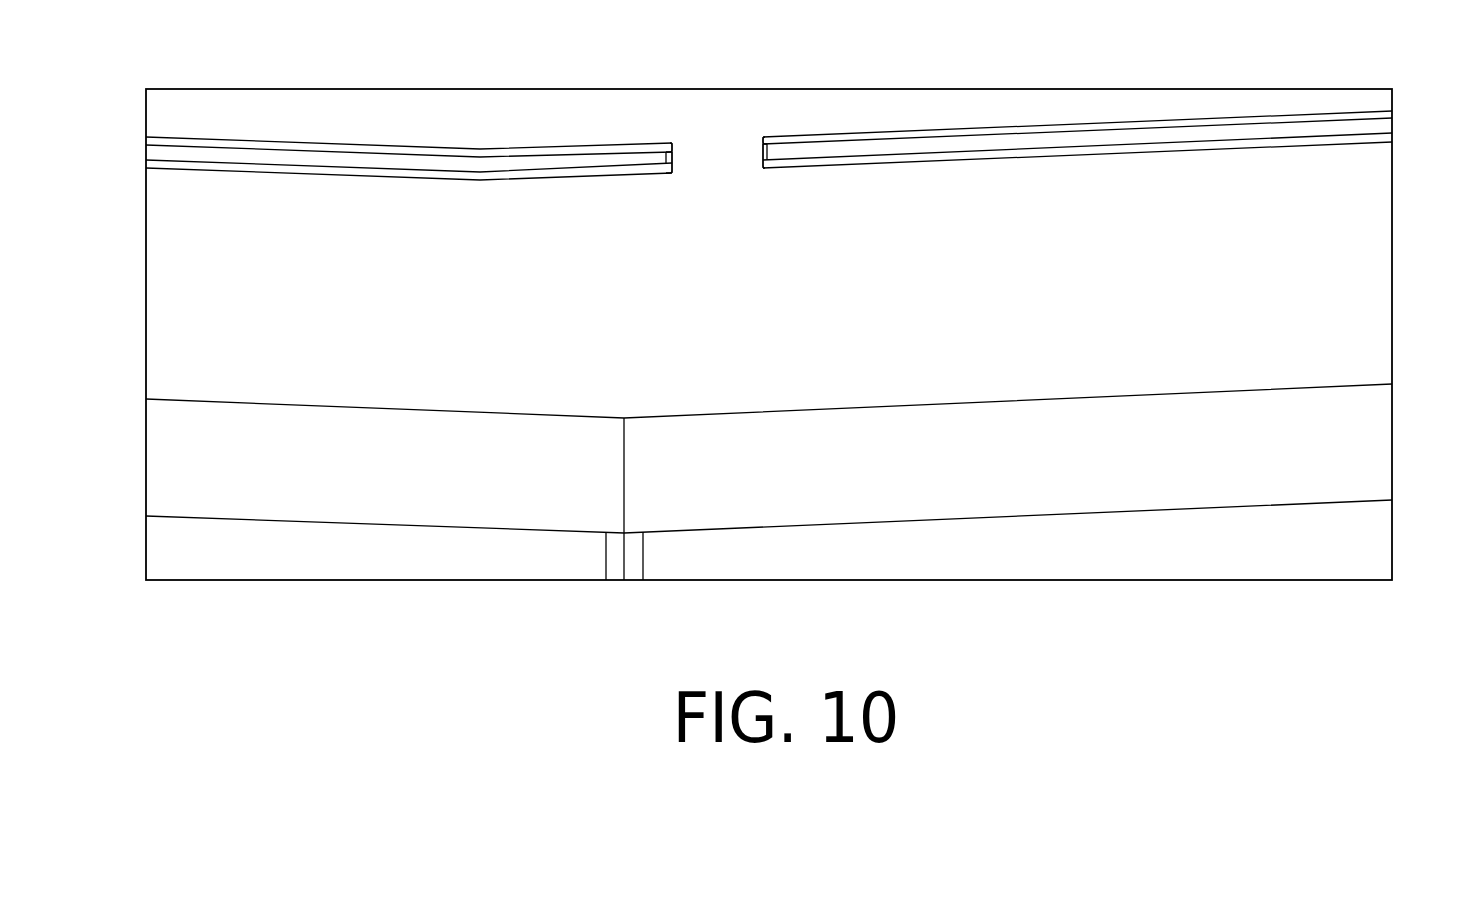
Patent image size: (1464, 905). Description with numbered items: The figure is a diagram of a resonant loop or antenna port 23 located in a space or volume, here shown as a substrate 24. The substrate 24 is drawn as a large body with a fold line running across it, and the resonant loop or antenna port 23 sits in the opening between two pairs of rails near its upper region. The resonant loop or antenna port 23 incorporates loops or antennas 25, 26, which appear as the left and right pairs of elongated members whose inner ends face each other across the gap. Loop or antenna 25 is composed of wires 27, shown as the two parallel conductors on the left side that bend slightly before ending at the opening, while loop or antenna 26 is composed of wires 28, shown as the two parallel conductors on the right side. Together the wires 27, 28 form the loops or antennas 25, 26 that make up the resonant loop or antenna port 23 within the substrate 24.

The resonant loop or antenna port 23 is at (724, 197).
The substrate 24 is at (561, 88).
The loop or antenna 25 is at (631, 208).
The loop or antenna 26 is at (813, 200).
The wires 27 is at (146, 142).
The wires 28 is at (1388, 114).